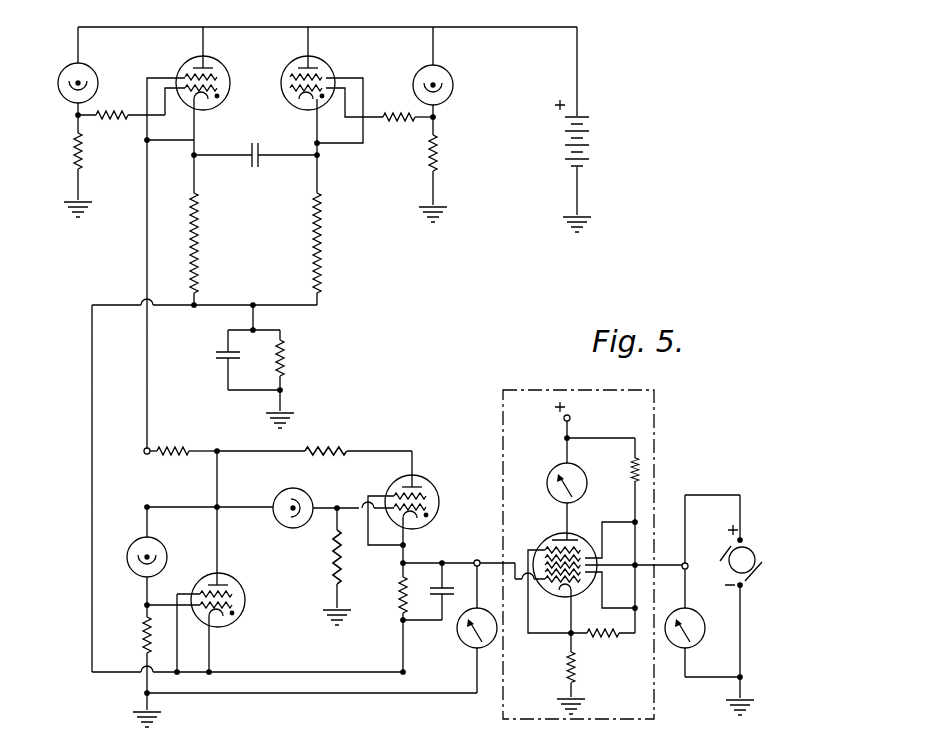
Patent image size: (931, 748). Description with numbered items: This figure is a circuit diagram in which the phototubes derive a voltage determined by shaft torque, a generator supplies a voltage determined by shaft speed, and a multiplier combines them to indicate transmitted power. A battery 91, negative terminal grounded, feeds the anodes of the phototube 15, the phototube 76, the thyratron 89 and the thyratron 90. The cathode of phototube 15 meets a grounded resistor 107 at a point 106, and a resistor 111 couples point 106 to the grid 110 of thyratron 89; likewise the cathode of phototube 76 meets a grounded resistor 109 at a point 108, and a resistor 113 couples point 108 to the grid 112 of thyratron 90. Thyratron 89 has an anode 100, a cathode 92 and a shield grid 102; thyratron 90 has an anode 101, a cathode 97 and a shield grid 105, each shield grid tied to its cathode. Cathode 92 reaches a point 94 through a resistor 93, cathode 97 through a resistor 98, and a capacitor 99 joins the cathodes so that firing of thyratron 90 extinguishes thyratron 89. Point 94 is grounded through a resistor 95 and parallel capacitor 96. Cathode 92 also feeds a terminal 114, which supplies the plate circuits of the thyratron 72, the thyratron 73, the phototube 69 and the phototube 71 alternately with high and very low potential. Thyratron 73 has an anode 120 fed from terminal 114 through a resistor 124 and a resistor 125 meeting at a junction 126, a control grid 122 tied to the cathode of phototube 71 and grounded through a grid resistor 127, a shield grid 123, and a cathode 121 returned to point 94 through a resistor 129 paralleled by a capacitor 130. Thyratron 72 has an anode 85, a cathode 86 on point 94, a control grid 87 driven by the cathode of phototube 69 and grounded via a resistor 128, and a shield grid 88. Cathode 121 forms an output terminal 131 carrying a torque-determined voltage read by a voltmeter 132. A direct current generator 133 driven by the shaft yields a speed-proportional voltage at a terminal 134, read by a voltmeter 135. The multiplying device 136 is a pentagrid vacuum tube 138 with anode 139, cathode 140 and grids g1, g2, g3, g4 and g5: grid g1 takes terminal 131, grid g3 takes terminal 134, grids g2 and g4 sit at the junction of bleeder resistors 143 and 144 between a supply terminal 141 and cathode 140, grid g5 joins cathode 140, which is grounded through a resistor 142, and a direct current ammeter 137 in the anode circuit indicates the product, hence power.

The phototube 15 is at (91, 68).
The point 106 is at (75, 115).
The resistor 111 is at (116, 128).
The resistor 107 is at (75, 155).
The shield grid 102 is at (165, 77).
The grid 110 is at (175, 108).
The thyratron 89 is at (230, 78).
The anode 100 is at (205, 52).
The cathode 92 is at (204, 105).
The resistor 93 is at (197, 237).
The capacitor 99 is at (256, 172).
The thyratron 90 is at (333, 73).
The anode 101 is at (313, 52).
The cathode 97 is at (313, 122).
The shield grid 105 is at (363, 80).
The grid 112 is at (344, 105).
The resistor 113 is at (398, 126).
The phototube 76 is at (449, 72).
The point 108 is at (436, 117).
The resistor 109 is at (437, 160).
The battery 91 is at (590, 145).
The resistor 98 is at (320, 245).
The point 94 is at (255, 305).
The capacitor 96 is at (214, 356).
The resistor 95 is at (284, 358).
The terminal 114 is at (144, 451).
The resistor 125 is at (175, 448).
The junction 126 is at (218, 449).
The resistor 124 is at (330, 450).
The phototube 71 is at (308, 495).
The grid resistor 127 is at (335, 561).
The thyratron 73 is at (392, 482).
The anode 120 is at (425, 480).
The shield grid 123 is at (430, 497).
The control grid 122 is at (430, 508).
The cathode 121 is at (405, 545).
The phototube 69 is at (155, 540).
The thyratron 72 is at (245, 597).
The anode 85 is at (225, 578).
The shield grid 88 is at (186, 592).
The control grid 87 is at (180, 618).
The cathode 86 is at (215, 620).
The resistor 128 is at (144, 640).
The resistor 129 is at (396, 600).
The capacitor 130 is at (435, 595).
The output terminal 131 is at (477, 560).
The voltmeter 132 is at (458, 640).
The multiplying device 136 is at (538, 390).
The terminal 141 is at (572, 417).
The bleeder resistor 143 is at (633, 470).
The direct current ammeter 137 is at (552, 468).
The anode 139 is at (572, 518).
The vacuum tube 138 is at (553, 532).
The grid g5 is at (530, 548).
The grid g4 is at (602, 547).
The grid g3 is at (590, 567).
The grid g2 is at (592, 574).
The grid g1 is at (526, 582).
The cathode 140 is at (561, 598).
The bleeder resistor 144 is at (596, 636).
The resistor 142 is at (565, 675).
The terminal 134 is at (688, 566).
The direct current generator 133 is at (752, 548).
The direct current voltmeter 135 is at (698, 640).